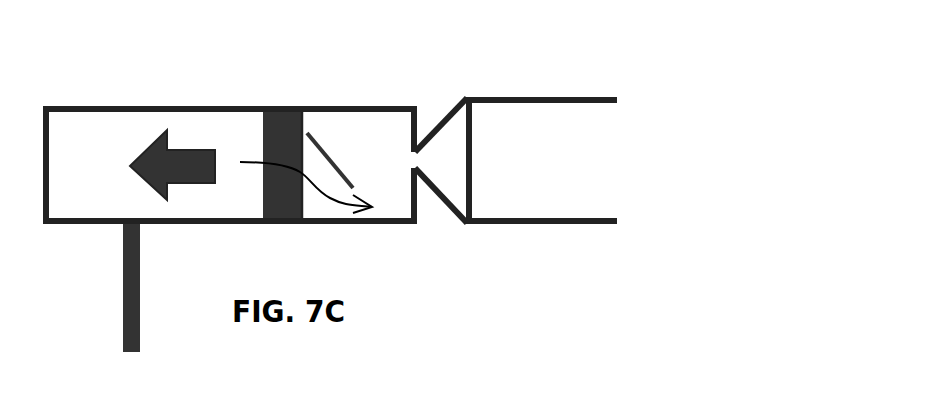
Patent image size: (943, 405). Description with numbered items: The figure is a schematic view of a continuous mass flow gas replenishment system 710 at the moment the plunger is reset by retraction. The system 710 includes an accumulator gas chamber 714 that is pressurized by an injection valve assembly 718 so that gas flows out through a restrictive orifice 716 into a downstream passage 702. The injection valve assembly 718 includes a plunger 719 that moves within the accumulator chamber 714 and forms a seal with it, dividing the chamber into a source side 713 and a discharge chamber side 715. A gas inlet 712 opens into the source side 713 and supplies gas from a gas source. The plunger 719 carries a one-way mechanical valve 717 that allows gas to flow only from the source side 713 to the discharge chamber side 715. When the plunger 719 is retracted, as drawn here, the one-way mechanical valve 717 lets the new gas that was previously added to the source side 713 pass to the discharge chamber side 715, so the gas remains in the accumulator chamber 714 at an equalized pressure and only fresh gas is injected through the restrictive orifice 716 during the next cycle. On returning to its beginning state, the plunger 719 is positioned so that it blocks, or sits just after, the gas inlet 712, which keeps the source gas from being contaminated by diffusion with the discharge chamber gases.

The channel 702 is at (537, 103).
The continuous mass flow gas replenishment system 710 is at (90, 59).
The gas inlet 712 is at (128, 279).
The source side 713 is at (144, 165).
The accumulator gas chamber 714 is at (388, 106).
The discharge chamber side 715 is at (374, 164).
The restrictive orifice 716 is at (412, 159).
The one-way mechanical valve 717 is at (320, 150).
The injection valve assembly 718 is at (238, 85).
The plunger 719 is at (263, 207).